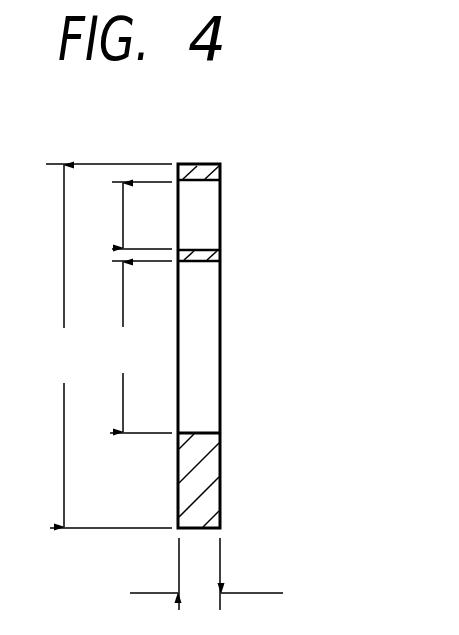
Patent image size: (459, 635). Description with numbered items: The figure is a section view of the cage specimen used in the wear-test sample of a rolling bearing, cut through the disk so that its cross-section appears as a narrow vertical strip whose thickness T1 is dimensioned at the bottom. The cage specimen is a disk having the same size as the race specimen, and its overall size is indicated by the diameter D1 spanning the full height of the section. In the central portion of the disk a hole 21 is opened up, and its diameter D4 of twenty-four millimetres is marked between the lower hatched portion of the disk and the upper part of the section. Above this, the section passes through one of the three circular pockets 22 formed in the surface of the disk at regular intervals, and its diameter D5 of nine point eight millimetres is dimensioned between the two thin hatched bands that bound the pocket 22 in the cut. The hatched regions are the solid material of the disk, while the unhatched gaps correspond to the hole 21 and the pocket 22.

The hole 21 is at (207, 433).
The circular pocket 22 is at (203, 183).
The diameter D1 is at (64, 346).
The diameter D4 is at (124, 347).
The diameter D5 is at (124, 210).
The thickness T1 is at (206, 574).